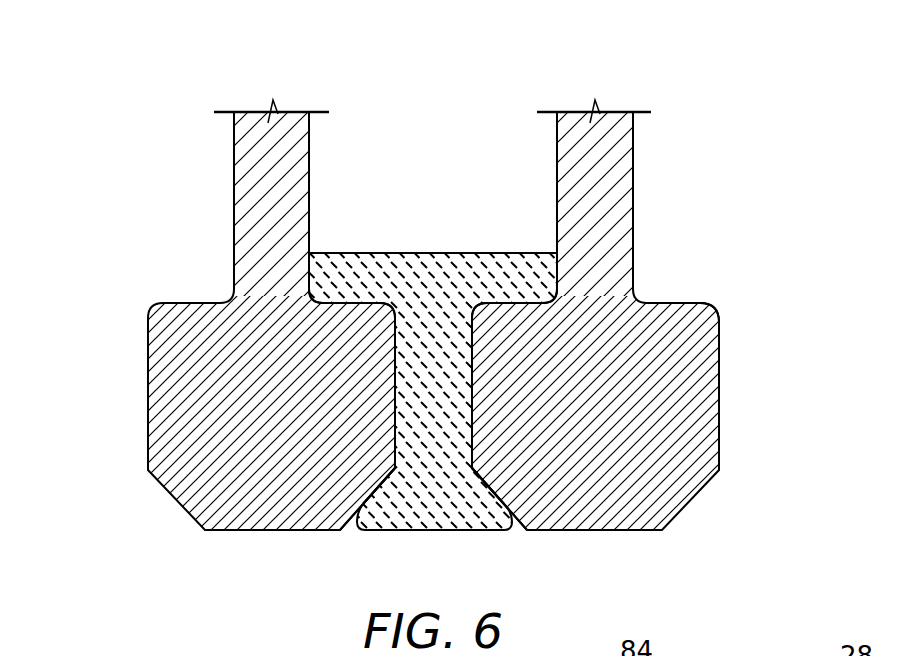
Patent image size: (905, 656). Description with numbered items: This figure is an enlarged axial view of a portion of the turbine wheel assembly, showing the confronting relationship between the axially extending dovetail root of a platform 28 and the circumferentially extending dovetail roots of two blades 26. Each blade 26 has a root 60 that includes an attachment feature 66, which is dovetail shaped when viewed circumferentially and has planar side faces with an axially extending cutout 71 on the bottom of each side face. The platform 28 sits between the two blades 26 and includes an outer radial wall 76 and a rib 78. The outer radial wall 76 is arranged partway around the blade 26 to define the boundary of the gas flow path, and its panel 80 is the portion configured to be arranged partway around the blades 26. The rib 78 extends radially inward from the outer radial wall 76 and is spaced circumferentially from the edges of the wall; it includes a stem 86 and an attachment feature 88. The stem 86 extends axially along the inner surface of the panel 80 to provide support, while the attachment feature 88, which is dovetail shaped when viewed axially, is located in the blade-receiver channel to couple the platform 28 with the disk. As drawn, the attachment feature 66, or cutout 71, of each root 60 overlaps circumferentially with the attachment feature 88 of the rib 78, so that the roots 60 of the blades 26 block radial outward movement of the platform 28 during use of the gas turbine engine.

The blade 26 is at (265, 72).
The platform 28 is at (460, 143).
The root 60 is at (130, 428).
The attachment feature 66 is at (741, 441).
The cutout 71 is at (345, 526).
The outer radial wall 76 is at (478, 252).
The rib 78 is at (405, 389).
The panel 80 is at (397, 232).
The stem 86 is at (690, 327).
The attachment feature 88 is at (469, 500).